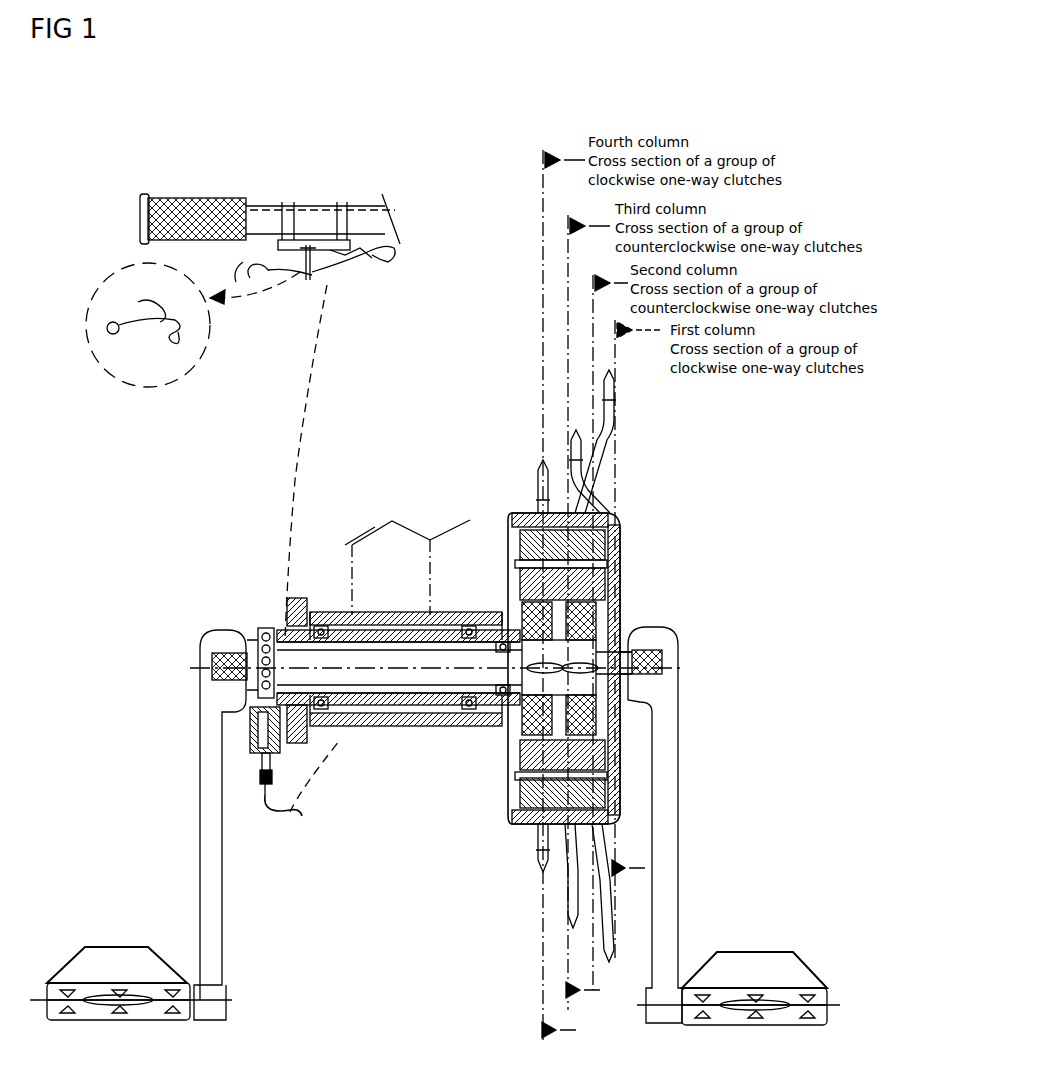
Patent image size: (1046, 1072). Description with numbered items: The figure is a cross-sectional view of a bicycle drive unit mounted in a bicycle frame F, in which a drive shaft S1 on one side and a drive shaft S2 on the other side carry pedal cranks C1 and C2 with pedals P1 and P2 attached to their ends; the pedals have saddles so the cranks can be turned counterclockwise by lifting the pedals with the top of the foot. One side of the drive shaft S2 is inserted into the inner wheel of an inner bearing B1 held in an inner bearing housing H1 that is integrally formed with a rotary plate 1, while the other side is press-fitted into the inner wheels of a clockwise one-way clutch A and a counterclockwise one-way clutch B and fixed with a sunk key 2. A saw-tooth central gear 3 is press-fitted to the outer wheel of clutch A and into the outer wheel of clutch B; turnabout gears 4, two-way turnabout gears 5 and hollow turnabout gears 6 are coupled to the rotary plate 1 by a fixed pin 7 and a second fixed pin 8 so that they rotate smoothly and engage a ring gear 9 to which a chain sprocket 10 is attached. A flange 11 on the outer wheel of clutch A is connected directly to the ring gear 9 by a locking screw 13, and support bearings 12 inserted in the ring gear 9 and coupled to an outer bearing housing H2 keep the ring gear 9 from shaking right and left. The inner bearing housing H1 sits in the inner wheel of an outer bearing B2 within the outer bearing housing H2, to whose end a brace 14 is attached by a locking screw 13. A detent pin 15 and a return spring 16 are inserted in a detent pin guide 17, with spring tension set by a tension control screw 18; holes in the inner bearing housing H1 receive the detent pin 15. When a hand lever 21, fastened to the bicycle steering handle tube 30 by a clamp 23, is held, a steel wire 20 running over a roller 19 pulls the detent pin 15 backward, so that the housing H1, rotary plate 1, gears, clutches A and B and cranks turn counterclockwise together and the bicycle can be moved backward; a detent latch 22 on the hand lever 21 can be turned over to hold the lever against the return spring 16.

The rotary plate 1 is at (527, 590).
The sunk key 2 is at (492, 613).
The central gear 3 is at (622, 560).
The turnabout gear 4 is at (520, 555).
The two-way turnabout gear 5 is at (532, 560).
The hollow turnabout gear 6 is at (625, 505).
The fixed pin 7 is at (515, 545).
The second fixed pin 8 is at (515, 525).
The ring gear 9 is at (618, 485).
The chain sprocket 10 is at (620, 445).
The flange 11 is at (622, 605).
The support bearings 12 is at (508, 815).
The locking screw 13 is at (622, 588).
The brace 14 is at (270, 598).
The detent pin 15 is at (250, 735).
The return spring 16 is at (345, 280).
The detent pin guide 17 is at (262, 735).
The tension control screw 18 is at (268, 772).
The roller 19 is at (270, 790).
The steel wire 20 is at (298, 812).
The hand lever 21 is at (280, 290).
The detent latch 22 is at (130, 365).
The clamp 23 is at (382, 216).
The bicycle steering handle tube 30 is at (272, 215).
The bicycle frame F is at (407, 567).
The clockwise one-way clutch A is at (625, 748).
The counterclockwise one-way clutch B is at (622, 800).
The inner bearing B1 is at (352, 705).
The outer bearing B2 is at (372, 705).
The inner bearing housing H1 is at (383, 707).
The outer bearing housing H2 is at (410, 723).
The drive shaft S1 is at (512, 708).
The drive shaft S2 is at (440, 680).
The pedal crank C1 is at (668, 932).
The pedal crank C2 is at (205, 935).
The pedal P1 is at (780, 950).
The pedal P2 is at (85, 945).